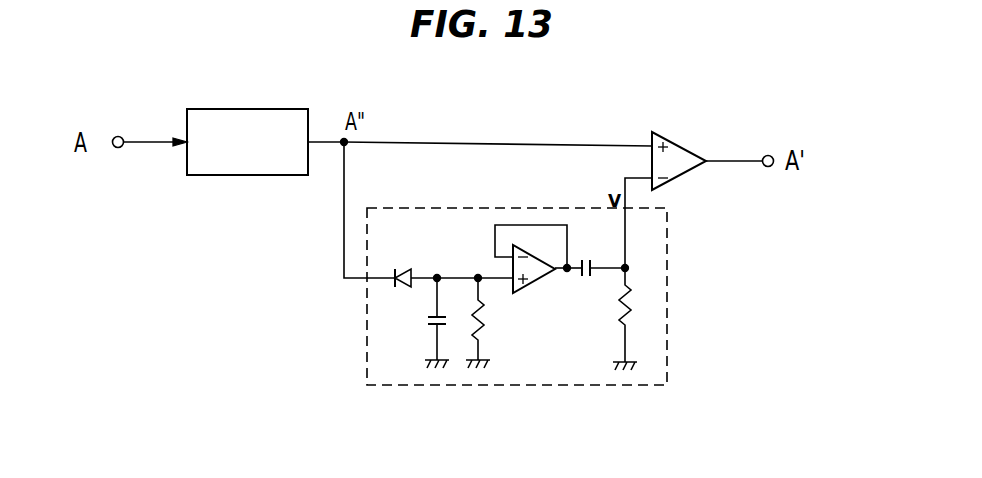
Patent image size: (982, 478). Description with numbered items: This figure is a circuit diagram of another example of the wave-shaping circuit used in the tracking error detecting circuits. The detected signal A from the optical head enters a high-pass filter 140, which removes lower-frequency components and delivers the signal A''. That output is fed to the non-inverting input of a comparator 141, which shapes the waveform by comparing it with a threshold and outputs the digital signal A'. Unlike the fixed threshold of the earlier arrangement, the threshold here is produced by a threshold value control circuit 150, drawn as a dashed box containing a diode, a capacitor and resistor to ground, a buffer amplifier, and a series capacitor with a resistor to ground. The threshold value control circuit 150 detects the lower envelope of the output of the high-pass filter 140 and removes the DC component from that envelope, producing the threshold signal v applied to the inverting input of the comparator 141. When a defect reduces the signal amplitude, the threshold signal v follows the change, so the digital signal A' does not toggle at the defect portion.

The high-pass filter 140 is at (252, 109).
The comparator 141 is at (679, 143).
The threshold value control circuit 150 is at (724, 283).